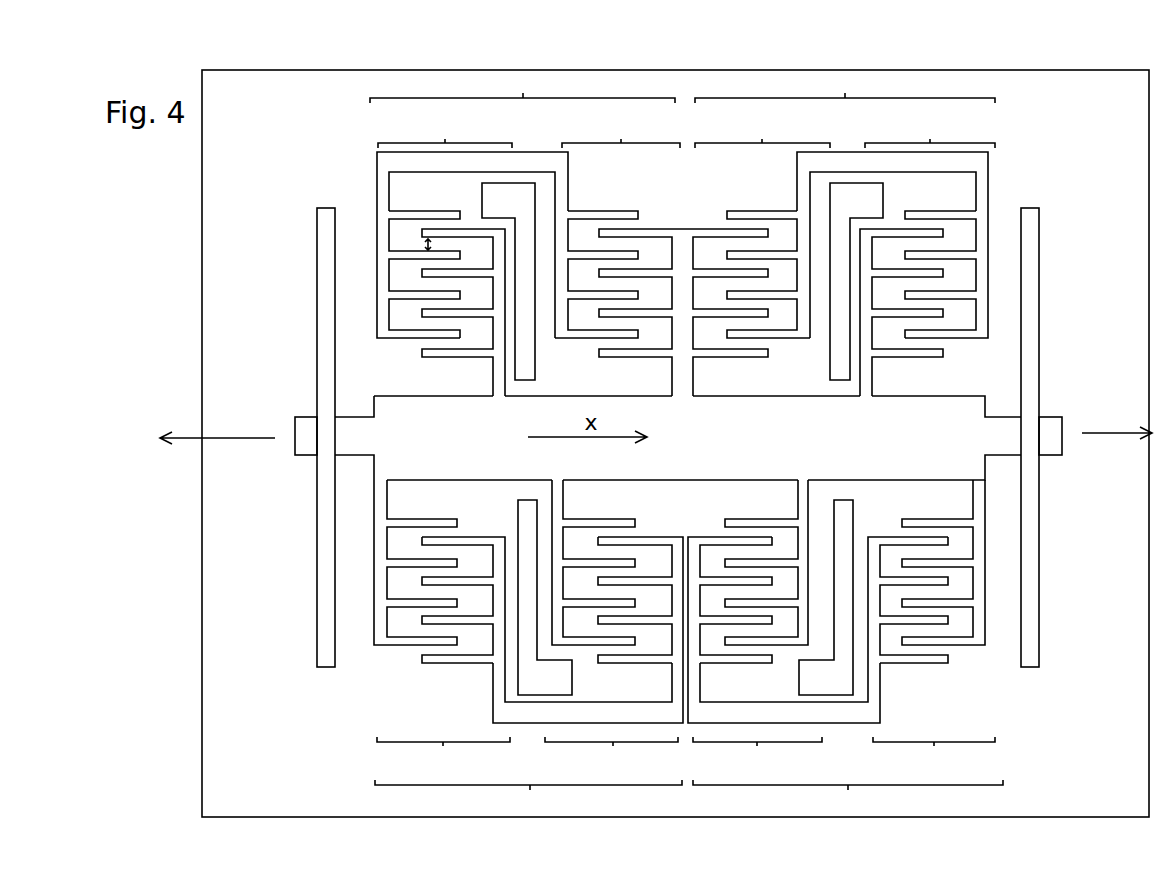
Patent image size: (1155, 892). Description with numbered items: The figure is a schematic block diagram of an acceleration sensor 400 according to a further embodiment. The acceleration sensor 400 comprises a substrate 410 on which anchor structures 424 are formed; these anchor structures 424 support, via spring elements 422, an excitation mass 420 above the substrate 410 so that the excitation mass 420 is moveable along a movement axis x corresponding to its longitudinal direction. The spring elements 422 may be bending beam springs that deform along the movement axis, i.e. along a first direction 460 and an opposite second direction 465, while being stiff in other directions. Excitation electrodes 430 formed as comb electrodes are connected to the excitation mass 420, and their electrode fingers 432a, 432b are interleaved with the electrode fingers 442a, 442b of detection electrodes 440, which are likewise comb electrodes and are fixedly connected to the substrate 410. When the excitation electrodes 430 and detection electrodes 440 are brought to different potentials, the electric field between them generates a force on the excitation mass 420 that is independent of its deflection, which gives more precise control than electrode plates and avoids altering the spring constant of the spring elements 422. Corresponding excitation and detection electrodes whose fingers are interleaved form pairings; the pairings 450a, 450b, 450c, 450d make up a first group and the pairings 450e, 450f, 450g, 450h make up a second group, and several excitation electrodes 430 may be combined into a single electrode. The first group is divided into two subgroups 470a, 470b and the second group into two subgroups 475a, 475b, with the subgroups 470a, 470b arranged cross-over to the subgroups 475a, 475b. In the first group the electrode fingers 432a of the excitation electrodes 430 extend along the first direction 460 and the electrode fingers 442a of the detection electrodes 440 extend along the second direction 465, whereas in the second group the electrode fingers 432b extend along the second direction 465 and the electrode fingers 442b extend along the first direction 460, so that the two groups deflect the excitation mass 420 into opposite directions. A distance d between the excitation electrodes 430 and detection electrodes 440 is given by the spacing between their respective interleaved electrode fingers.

The acceleration sensor 400 is at (179, 208).
The substrate 410 is at (203, 706).
The excitation mass 420 is at (763, 453).
The spring elements 422 is at (316, 612).
The anchor structures 424 is at (293, 437).
The excitation electrodes 430 is at (643, 228).
The electrode fingers of the excitation electrodes of the first group 432a is at (730, 357).
The electrode fingers of the excitation electrodes of the second group 432b is at (639, 357).
The detection electrodes 440 is at (797, 186).
The electrode fingers of the detection electrodes of the first group 442a is at (962, 338).
The electrode fingers of the detection electrodes of the second group 442b is at (402, 338).
The pairing 450a is at (756, 254).
The pairing 450b is at (927, 254).
The pairing 450c is at (442, 630).
The pairing 450d is at (614, 630).
The pairing 450e is at (444, 254).
The pairing 450f is at (619, 254).
The pairing 450g is at (755, 630).
The pairing 450h is at (931, 630).
The first direction 460 is at (1117, 449).
The second direction 465 is at (185, 435).
The subgroup of the first group 470a is at (839, 234).
The subgroup of the first group 470b is at (528, 648).
The subgroup of the second group 475a is at (526, 234).
The subgroup of the second group 475b is at (845, 648).
The distance d is at (414, 238).